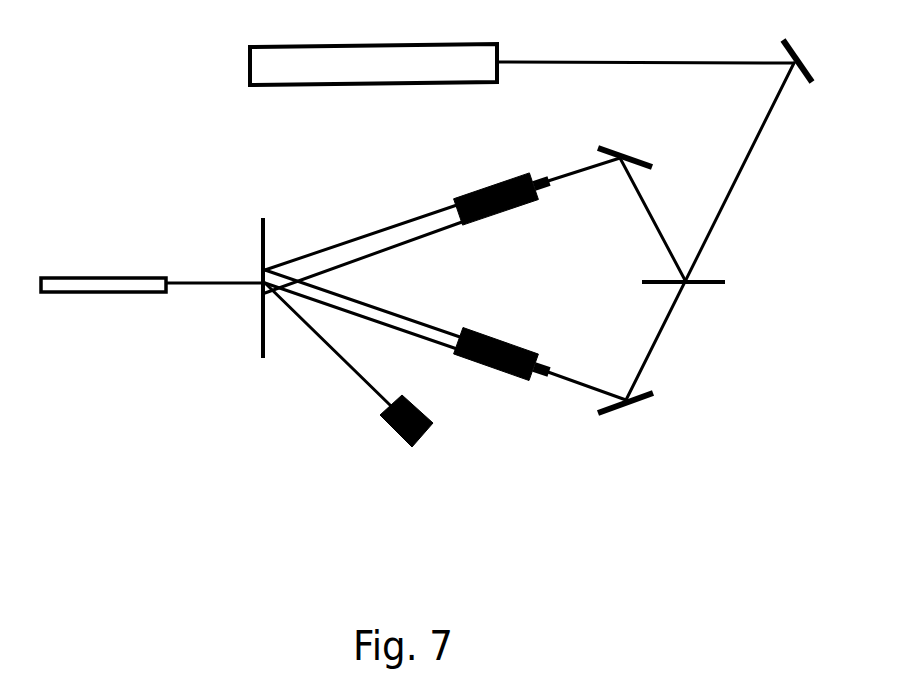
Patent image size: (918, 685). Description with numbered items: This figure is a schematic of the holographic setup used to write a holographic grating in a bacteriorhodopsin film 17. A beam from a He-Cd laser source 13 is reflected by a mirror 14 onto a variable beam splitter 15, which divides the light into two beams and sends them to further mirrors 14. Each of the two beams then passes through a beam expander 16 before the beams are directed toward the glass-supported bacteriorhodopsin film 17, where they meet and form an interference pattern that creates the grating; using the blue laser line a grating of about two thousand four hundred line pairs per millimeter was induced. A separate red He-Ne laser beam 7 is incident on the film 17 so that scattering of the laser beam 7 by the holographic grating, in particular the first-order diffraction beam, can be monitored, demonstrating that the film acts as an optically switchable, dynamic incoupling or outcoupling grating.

The laser light source 13 is at (373, 66).
The mirror 14 is at (729, 237).
The variable beam splitter 15 is at (708, 284).
The beam expander 16 is at (501, 286).
The bacteriorhodopsin film 17 is at (155, 273).
The laser beam 7 is at (406, 443).